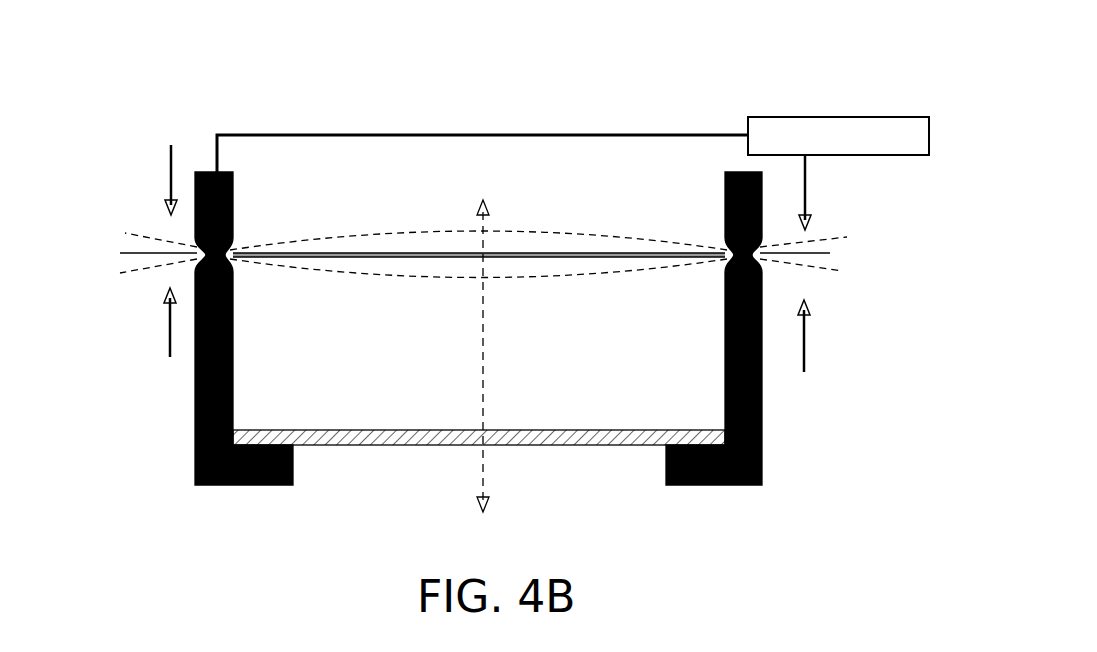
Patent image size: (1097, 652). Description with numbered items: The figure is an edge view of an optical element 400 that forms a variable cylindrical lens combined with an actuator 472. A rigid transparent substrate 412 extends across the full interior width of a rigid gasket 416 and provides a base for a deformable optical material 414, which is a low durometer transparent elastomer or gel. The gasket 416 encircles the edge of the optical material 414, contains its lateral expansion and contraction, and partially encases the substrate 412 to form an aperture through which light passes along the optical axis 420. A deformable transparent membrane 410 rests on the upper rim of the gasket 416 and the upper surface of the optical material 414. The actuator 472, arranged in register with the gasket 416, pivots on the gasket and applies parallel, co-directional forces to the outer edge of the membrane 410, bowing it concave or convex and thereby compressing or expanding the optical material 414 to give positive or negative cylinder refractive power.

The optical element 400 is at (830, 213).
The deformable transparent membrane 410 is at (138, 252).
The transparent substrate 412 is at (406, 446).
The deformable optical material 414 is at (764, 410).
The gasket 416 is at (194, 413).
The optical axis 420 is at (478, 480).
The actuator 472 is at (808, 117).